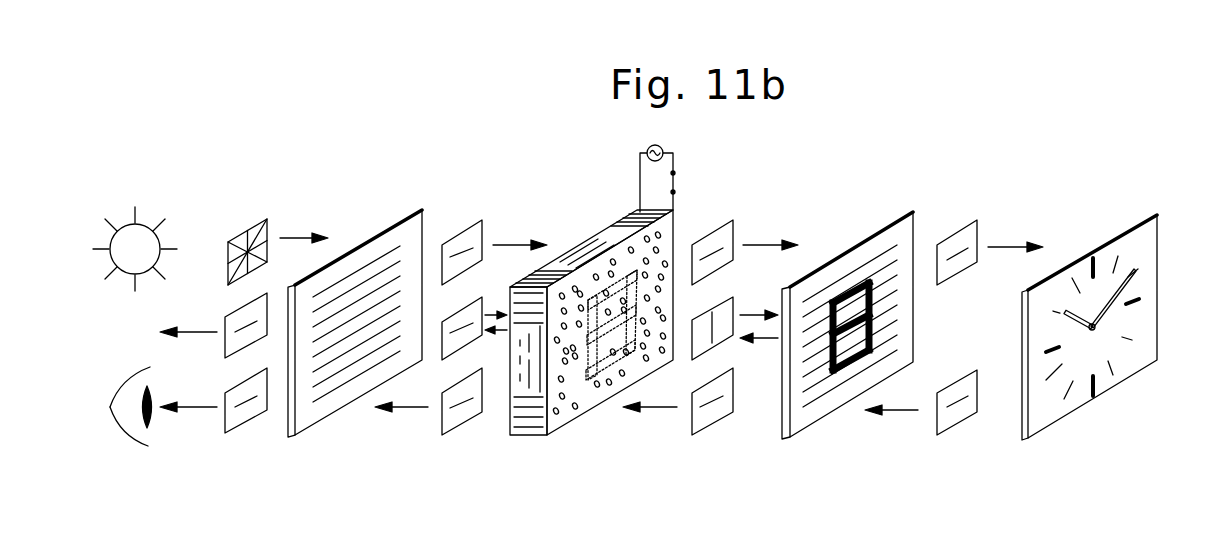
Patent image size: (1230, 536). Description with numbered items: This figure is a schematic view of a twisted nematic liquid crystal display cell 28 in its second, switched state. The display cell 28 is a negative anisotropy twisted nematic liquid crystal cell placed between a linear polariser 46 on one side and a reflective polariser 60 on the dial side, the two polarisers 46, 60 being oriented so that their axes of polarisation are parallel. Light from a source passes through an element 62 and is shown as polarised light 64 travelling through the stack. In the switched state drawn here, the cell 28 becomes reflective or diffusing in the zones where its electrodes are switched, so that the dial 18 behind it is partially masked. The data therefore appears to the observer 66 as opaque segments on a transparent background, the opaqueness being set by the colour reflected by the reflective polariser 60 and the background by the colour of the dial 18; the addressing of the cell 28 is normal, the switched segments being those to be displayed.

The dial 18 is at (1155, 215).
The display cell 28 is at (633, 227).
The linear polariser 46 is at (420, 208).
The reflective polariser 60 is at (913, 210).
The polarizer 62 is at (260, 222).
The polarized light 64 is at (482, 220).
The observer 66 is at (143, 387).